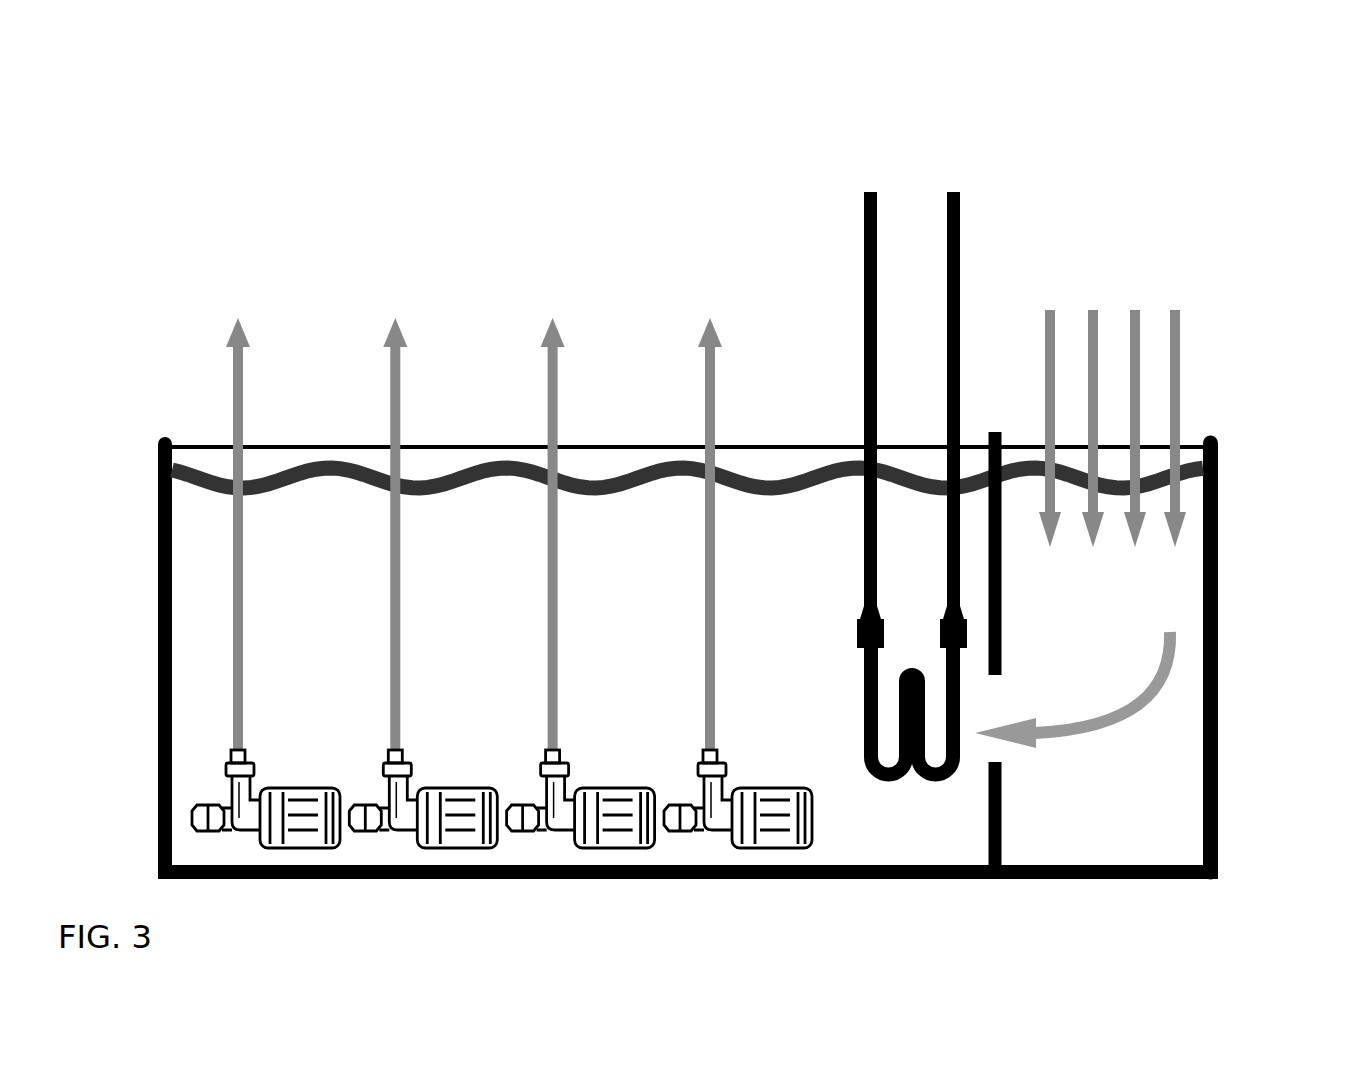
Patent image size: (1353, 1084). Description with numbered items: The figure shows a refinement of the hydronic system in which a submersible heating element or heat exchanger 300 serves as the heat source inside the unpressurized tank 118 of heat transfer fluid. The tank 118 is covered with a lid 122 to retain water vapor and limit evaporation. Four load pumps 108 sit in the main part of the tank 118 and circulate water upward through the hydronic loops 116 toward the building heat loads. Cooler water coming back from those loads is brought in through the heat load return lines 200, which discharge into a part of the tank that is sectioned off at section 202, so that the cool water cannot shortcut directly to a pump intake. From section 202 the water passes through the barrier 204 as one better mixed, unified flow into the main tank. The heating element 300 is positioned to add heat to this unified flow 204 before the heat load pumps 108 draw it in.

The pump 108 is at (318, 775).
The hydronic loop 116 is at (272, 315).
The unpressurized tank 118 is at (1308, 668).
The lid 122 is at (1214, 420).
The heat load return line 200 is at (1130, 296).
The section 202 is at (1137, 621).
The barrier 204 is at (1033, 714).
The submersible heating element or heat exchanger 300 is at (938, 216).